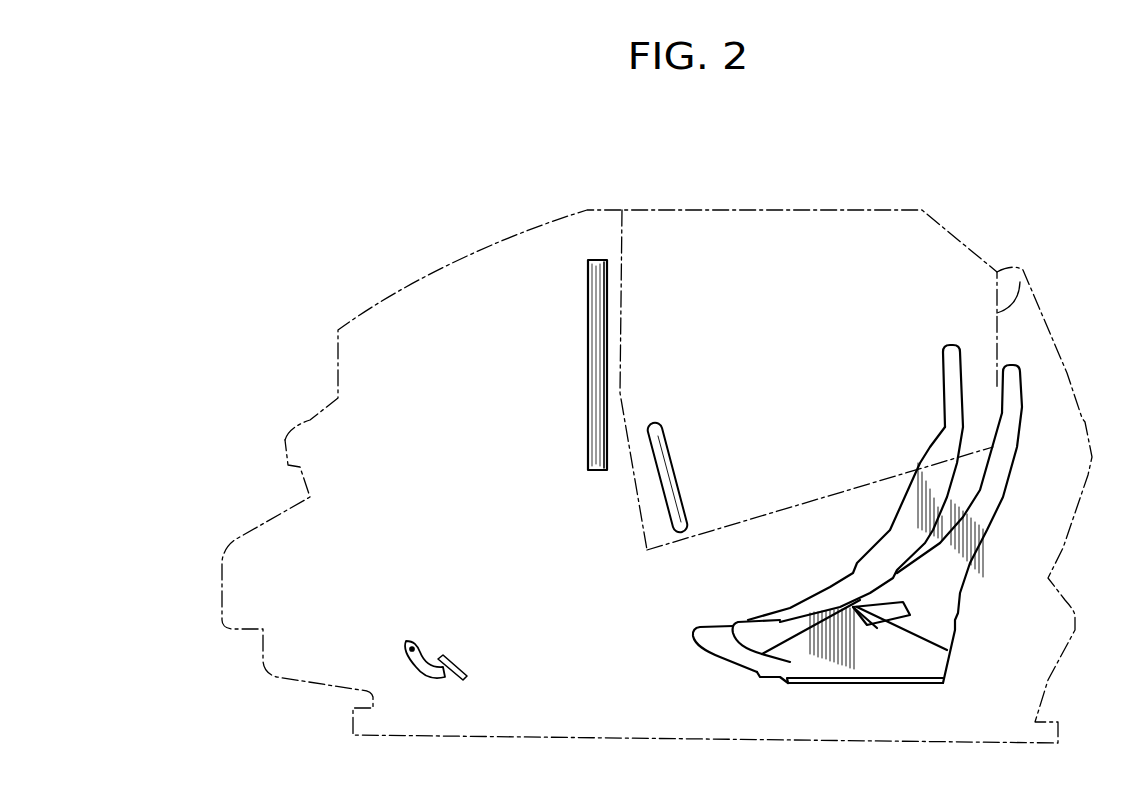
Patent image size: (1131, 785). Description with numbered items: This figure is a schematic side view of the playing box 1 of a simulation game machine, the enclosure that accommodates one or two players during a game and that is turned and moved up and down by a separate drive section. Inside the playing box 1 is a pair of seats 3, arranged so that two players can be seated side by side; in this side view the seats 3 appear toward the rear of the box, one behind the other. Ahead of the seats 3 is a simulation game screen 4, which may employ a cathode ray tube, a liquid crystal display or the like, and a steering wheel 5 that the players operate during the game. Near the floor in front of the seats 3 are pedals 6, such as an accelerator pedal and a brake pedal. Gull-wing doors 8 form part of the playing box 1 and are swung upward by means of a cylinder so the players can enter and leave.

The playing box 1 is at (445, 254).
The seats 3 is at (952, 362).
The simulation game screen 4 is at (608, 318).
The steering wheel 5 is at (673, 462).
The pedals 6 is at (455, 668).
The gull-wing doors 8 is at (1017, 290).